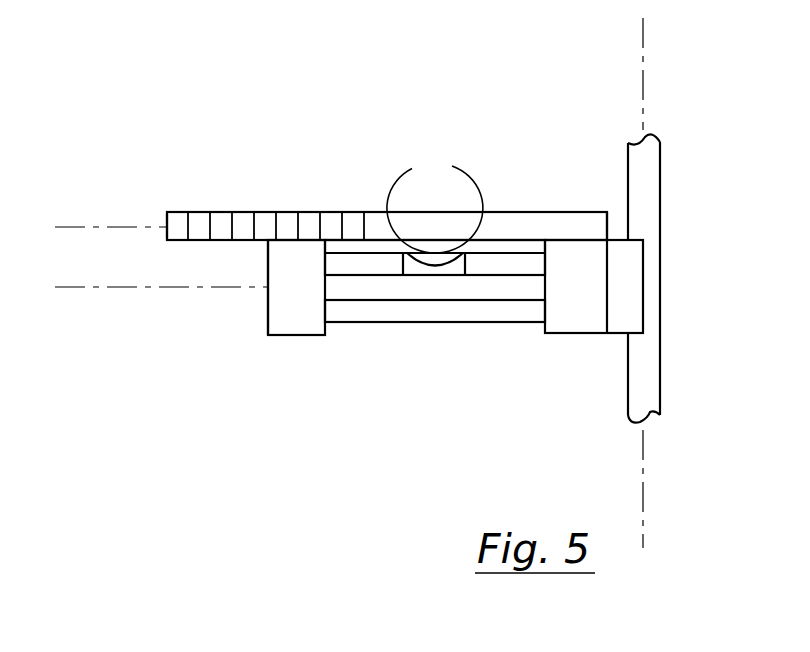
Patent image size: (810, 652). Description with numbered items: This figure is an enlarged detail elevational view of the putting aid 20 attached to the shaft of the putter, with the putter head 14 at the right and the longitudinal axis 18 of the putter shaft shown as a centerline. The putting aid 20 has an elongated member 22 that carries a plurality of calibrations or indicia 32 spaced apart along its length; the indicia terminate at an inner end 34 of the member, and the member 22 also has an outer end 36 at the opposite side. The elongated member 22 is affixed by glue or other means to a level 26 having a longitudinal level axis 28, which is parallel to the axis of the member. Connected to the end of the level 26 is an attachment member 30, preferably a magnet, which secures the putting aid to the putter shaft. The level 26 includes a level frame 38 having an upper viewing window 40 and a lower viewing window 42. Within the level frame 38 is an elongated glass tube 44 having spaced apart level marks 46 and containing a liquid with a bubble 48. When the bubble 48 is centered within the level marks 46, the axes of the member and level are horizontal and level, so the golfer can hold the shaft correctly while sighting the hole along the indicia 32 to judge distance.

The putter head 14 is at (655, 190).
The longitudinal axis of the putter shaft 18 is at (643, 52).
The putting aid 20 is at (205, 146).
The elongated member 22 is at (163, 204).
The level 26 is at (263, 341).
The longitudinal level axis 28 is at (85, 288).
The attachment member 30 is at (617, 335).
The indicia 32 is at (360, 212).
The inner end 34 is at (607, 228).
The outer end 36 is at (167, 232).
The level frame 38 is at (273, 298).
The upper viewing window 40 is at (543, 245).
The lower viewing window 42 is at (545, 328).
The elongated glass tube 44 is at (368, 322).
The level marks 46 is at (435, 199).
The bubble 48 is at (433, 260).